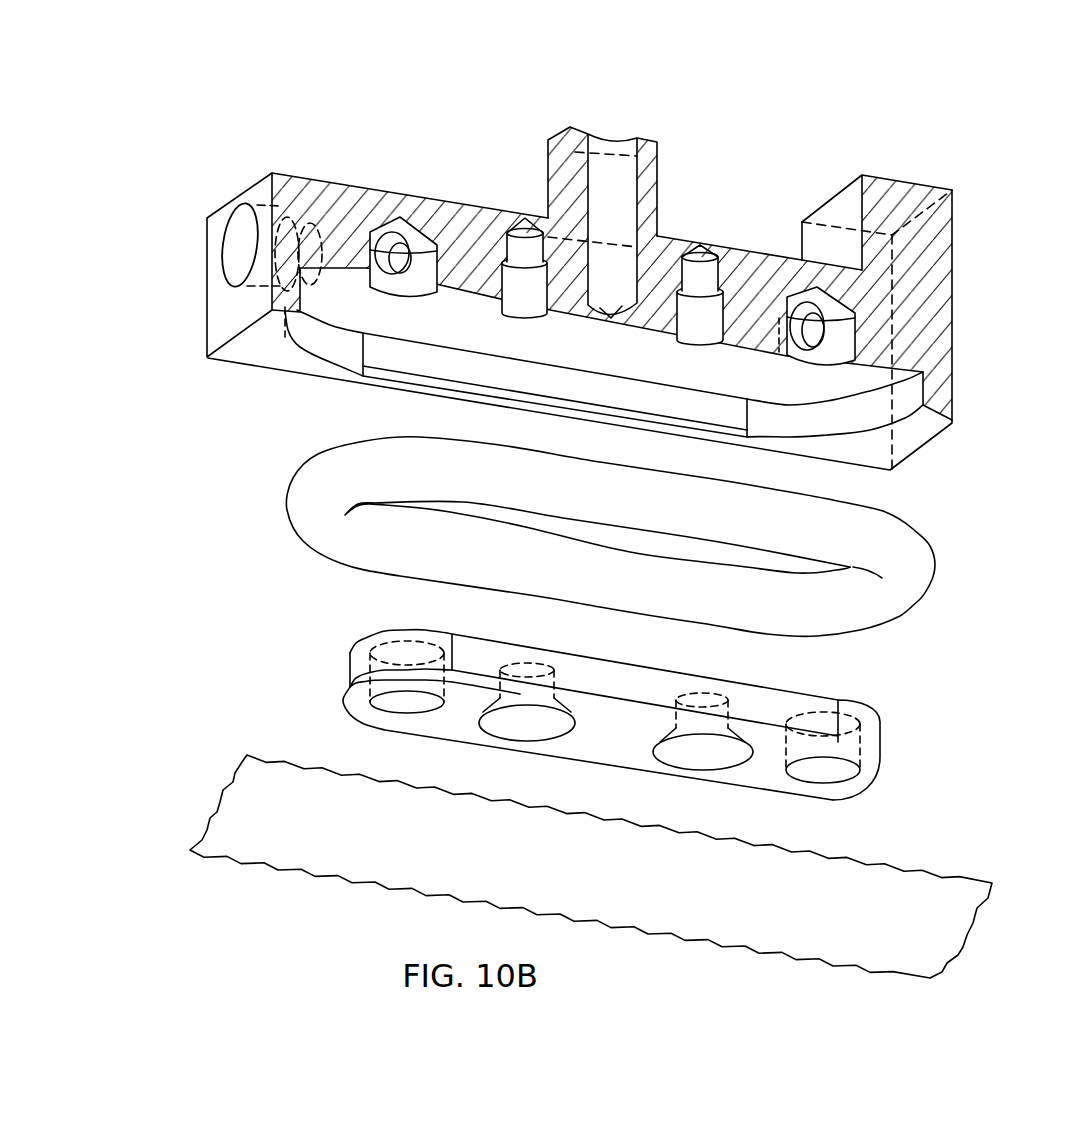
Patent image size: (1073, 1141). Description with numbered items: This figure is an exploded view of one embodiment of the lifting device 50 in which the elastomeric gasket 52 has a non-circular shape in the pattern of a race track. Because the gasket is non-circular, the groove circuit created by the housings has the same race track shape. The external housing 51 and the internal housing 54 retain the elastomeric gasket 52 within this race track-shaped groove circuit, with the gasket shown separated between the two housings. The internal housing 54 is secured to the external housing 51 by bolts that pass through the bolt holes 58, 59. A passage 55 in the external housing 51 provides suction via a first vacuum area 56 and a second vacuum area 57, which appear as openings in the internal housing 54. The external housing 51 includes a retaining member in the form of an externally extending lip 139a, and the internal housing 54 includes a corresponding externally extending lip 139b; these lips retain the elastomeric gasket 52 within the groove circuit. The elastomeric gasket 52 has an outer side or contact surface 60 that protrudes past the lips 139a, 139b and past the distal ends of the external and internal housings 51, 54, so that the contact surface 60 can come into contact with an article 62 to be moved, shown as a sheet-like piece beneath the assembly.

The lifting device 50 is at (976, 223).
The external housing 51 is at (954, 267).
The elastomeric gasket 52 is at (286, 502).
The internal housing 54 is at (348, 675).
The passage 55 is at (233, 256).
The first vacuum area 56 is at (401, 707).
The second vacuum area 57 is at (823, 778).
The bolt hole 58 is at (530, 297).
The bolt hole 59 is at (706, 327).
The contact surface 60 is at (889, 617).
The article 62 is at (302, 858).
The externally extending lip 139a is at (328, 360).
The externally extending lip 139b is at (878, 750).